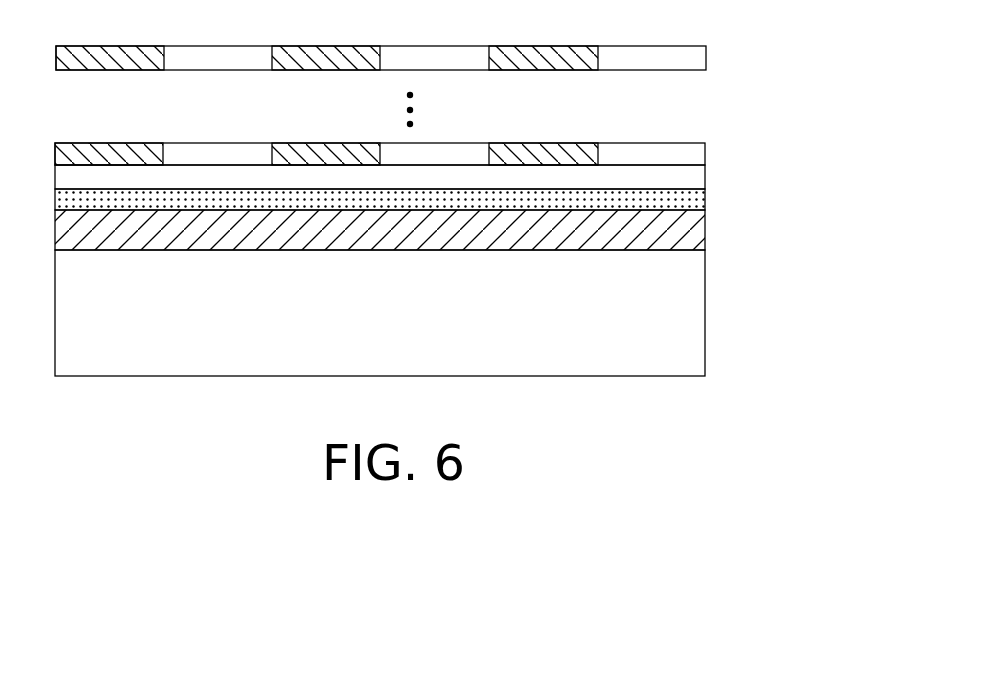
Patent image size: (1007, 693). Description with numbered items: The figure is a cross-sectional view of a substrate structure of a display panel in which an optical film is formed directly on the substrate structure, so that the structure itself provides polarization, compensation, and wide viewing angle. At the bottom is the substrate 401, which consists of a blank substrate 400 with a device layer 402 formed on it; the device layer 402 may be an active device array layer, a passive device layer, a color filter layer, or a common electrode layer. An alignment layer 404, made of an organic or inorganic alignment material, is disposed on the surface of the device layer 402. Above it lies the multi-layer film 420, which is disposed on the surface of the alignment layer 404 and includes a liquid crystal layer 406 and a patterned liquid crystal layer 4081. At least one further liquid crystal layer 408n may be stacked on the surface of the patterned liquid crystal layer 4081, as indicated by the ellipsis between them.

The blank substrate 400 is at (707, 267).
The device layer 402 is at (707, 232).
The alignment layer 404 is at (707, 200).
The liquid crystal layer 406 is at (707, 172).
The patterned liquid crystal layer 4081 is at (707, 151).
The liquid crystal layer 408n is at (695, 57).
The substrate 401 is at (452, 285).
The multi-layer film 420 is at (463, 86).